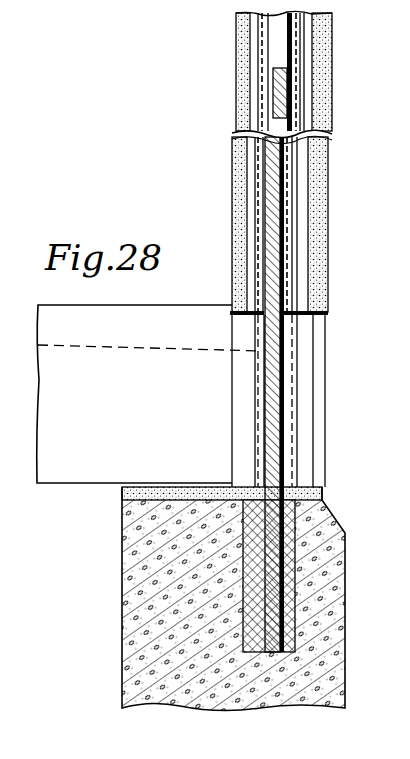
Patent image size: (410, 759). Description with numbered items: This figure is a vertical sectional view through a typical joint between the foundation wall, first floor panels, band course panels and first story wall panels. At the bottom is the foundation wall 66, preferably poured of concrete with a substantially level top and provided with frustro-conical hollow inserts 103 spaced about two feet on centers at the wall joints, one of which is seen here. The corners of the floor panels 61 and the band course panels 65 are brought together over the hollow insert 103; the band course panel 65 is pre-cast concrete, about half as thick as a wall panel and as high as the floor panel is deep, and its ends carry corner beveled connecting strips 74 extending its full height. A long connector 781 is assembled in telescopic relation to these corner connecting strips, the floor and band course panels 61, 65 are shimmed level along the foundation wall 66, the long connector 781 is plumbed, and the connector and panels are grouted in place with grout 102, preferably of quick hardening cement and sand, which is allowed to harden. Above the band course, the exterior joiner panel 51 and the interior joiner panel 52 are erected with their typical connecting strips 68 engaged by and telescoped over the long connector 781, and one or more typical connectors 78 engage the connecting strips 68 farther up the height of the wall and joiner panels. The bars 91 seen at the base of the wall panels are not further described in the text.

The connector 78 is at (290, 82).
The interior joiner panel 52 is at (234, 186).
The exterior joiner panel 51 is at (318, 200).
The connecting strip 68 is at (266, 226).
The base bar 91 is at (233, 306).
The corner beveled connecting strip 74 is at (297, 361).
The long connector 781 is at (280, 422).
The band course panel 65 is at (315, 458).
The floor panel 61 is at (90, 472).
The grout 102 is at (322, 496).
The frustro-conical hollow insert 103 is at (300, 570).
The foundation wall 66 is at (330, 605).